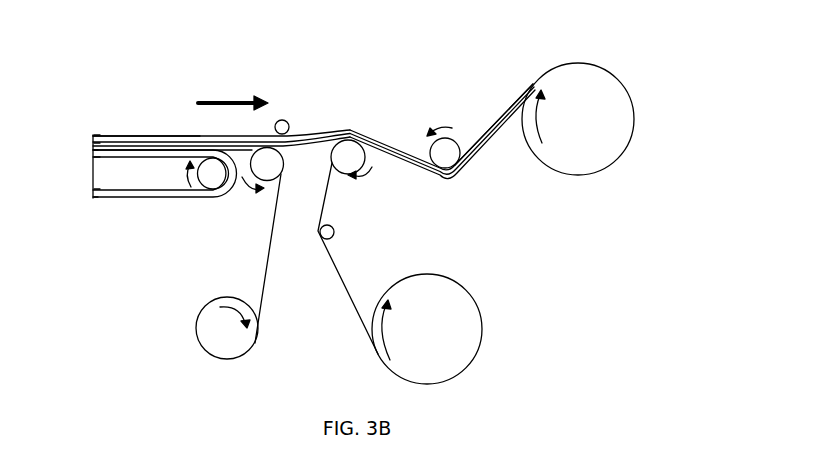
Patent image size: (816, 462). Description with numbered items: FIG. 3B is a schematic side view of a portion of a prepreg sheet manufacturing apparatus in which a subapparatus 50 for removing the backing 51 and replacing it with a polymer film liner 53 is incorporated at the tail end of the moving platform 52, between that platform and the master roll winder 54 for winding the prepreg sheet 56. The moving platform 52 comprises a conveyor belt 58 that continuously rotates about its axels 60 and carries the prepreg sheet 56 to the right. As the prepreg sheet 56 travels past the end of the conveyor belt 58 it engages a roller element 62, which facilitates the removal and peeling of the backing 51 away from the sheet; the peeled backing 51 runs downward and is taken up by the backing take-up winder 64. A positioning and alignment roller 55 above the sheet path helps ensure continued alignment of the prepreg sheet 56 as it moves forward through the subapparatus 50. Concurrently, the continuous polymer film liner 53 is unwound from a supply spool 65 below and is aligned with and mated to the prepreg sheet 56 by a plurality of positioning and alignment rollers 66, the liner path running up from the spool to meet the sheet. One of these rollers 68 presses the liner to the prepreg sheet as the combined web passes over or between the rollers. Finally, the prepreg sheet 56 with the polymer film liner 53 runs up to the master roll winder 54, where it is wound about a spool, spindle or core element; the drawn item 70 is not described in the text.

The subapparatus 50 is at (409, 82).
The backing 51 is at (112, 146).
The moving platform 52 is at (171, 228).
The polymer film liner 53 is at (340, 277).
The master roll winder 54 is at (590, 190).
The positioning and alignment roller 55 is at (282, 119).
The prepreg sheet 56 is at (167, 133).
The conveyor belt 58 is at (112, 199).
The axel 60 is at (215, 180).
The roller element 62 is at (269, 170).
The backing take-up winder 64 is at (195, 337).
The supply spool 65 is at (484, 347).
The positioning and alignment rollers 66 is at (348, 139).
The roller 68 is at (457, 141).
The cutting station 70 is at (507, 453).